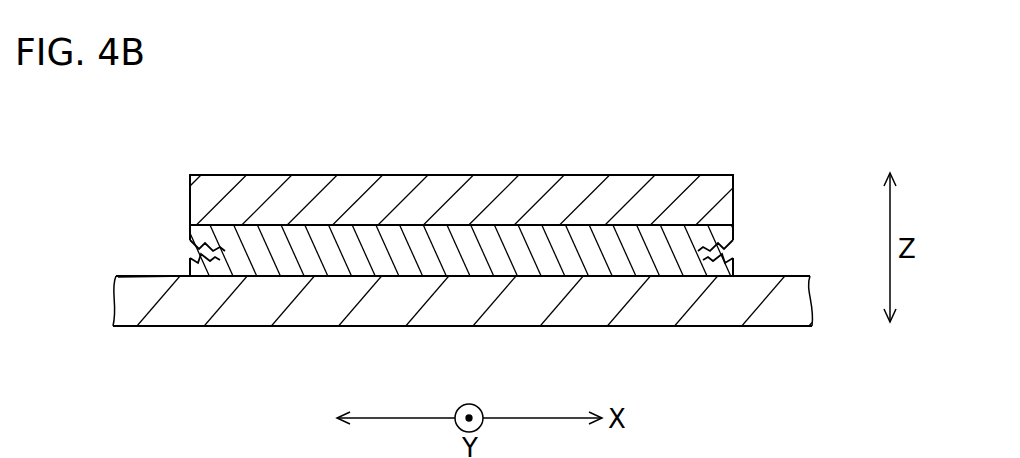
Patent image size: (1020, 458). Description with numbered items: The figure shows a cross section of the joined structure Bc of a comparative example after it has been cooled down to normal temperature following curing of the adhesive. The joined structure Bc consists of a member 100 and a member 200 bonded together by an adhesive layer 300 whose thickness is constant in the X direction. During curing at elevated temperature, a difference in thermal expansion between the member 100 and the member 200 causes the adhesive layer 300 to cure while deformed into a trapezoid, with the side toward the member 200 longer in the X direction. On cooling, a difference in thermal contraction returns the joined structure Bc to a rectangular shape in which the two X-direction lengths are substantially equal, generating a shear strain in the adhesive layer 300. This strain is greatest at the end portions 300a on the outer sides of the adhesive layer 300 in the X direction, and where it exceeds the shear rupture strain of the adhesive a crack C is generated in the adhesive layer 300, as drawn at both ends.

The member 100 is at (219, 175).
The adhesive layer 300 is at (177, 238).
The end portions 300a is at (118, 277).
The member 200 is at (207, 326).
The crack C is at (190, 249).
The joined structure Bc is at (258, 142).